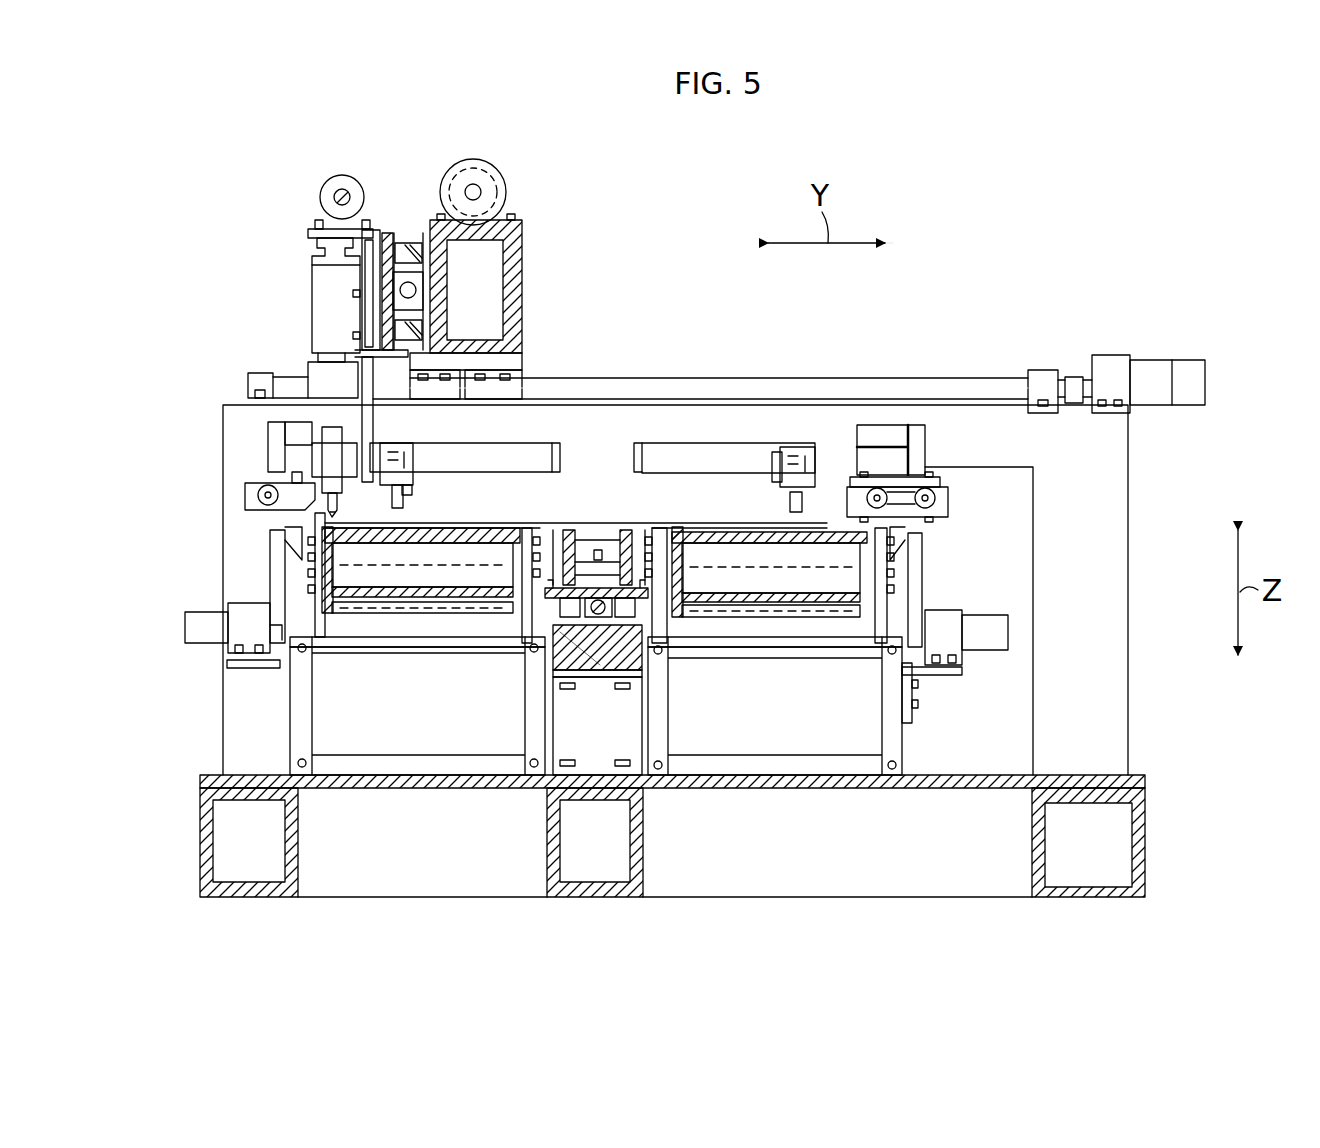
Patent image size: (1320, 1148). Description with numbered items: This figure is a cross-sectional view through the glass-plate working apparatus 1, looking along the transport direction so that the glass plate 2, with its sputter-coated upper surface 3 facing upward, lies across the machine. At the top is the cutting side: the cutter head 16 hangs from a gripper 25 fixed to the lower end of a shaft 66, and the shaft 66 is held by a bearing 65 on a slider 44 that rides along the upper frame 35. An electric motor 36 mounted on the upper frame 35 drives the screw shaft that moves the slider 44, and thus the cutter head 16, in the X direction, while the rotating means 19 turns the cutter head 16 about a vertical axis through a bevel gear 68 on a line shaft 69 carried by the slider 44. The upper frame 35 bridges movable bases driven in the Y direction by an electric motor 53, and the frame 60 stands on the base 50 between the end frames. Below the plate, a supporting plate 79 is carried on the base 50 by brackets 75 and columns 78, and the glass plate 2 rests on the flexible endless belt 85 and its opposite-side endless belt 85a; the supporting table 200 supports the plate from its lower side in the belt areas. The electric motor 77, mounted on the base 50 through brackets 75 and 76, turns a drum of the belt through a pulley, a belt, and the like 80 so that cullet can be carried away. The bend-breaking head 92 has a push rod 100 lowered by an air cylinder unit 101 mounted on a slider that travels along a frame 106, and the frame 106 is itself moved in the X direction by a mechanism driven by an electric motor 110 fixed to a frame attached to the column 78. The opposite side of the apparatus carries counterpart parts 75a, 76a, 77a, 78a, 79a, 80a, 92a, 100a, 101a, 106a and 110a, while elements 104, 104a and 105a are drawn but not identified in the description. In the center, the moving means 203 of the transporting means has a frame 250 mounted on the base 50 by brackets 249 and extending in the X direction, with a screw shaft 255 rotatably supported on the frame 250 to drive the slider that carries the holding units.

The glass-plate working apparatus 1 is at (703, 493).
The glass plate 2 is at (628, 523).
The upper surface 3 is at (602, 523).
The cutter head 16 is at (340, 498).
The rotating means 19 is at (284, 262).
The gripper 25 is at (328, 378).
The upper frame 35 is at (515, 246).
The electric motor 36 is at (506, 192).
The slider 44 is at (402, 230).
The base 50 is at (1145, 785).
The electric motor 53 is at (1150, 378).
The frame 60 is at (1100, 562).
The bearing 65 is at (325, 310).
The shaft 66 is at (310, 360).
The bevel gear 68 is at (312, 169).
The line shaft 69 is at (335, 194).
The bracket 75 is at (298, 737).
The support base 75a is at (895, 745).
The bracket 76 is at (235, 666).
The bracket 76a is at (948, 678).
The electric motor 77 is at (185, 625).
The cylinder 77a is at (1000, 632).
The column 78 is at (326, 648).
The support post 78a is at (695, 650).
The supporting plate 79 is at (382, 605).
The holding member 79a is at (752, 612).
The pulley, belt, and the like 80 is at (270, 540).
The guide post 80a is at (922, 572).
The endless belt 85 is at (421, 614).
The endless belt 85a is at (769, 634).
The bend-breaking head 92 is at (582, 520).
The slider 92a is at (778, 487).
The push rod 100 is at (410, 507).
The clamp 100a is at (788, 500).
The air cylinder unit 101 is at (398, 445).
The guide rail 101a is at (800, 443).
The bracket 104 is at (268, 440).
The bracket 104a is at (925, 440).
The rail 105a is at (888, 440).
The frame 106 is at (562, 452).
The slider 106a is at (652, 452).
The electric motor 110 is at (318, 482).
The roller 110a is at (945, 498).
The supporting table 200 is at (618, 523).
The moving means 203 is at (550, 612).
The bracket 249 is at (633, 735).
The frame 250 is at (590, 662).
The screw shaft 255 is at (568, 662).